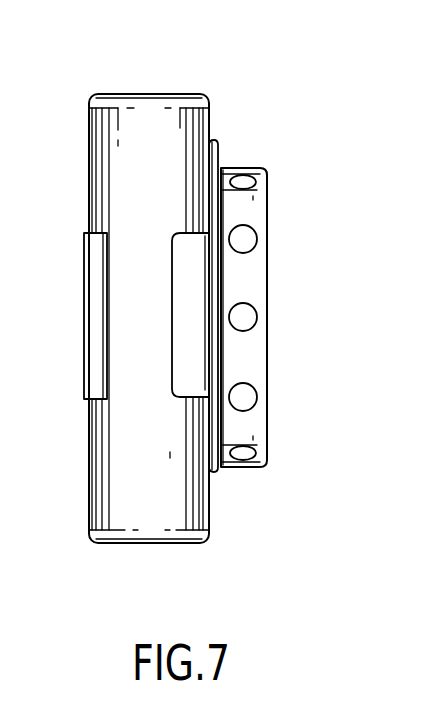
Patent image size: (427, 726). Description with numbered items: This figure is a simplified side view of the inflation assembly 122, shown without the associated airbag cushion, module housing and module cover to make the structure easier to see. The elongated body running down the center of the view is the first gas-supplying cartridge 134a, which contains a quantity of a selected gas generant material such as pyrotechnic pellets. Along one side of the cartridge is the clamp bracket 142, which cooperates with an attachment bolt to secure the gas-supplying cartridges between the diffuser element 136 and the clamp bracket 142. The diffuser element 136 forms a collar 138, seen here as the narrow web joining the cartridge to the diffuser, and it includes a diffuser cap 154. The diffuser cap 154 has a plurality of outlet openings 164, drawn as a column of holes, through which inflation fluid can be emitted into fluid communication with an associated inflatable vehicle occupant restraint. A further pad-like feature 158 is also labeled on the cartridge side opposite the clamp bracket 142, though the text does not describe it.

The inflation assembly 122 is at (177, 77).
The first gas-supplying cartridge 134a is at (142, 164).
The diffuser element 136 is at (271, 255).
The collar 138 is at (213, 482).
The clamp bracket 142 is at (95, 348).
The diffuser cap 154 is at (268, 370).
The side pad 158 is at (178, 382).
The outlet openings 164 is at (252, 468).